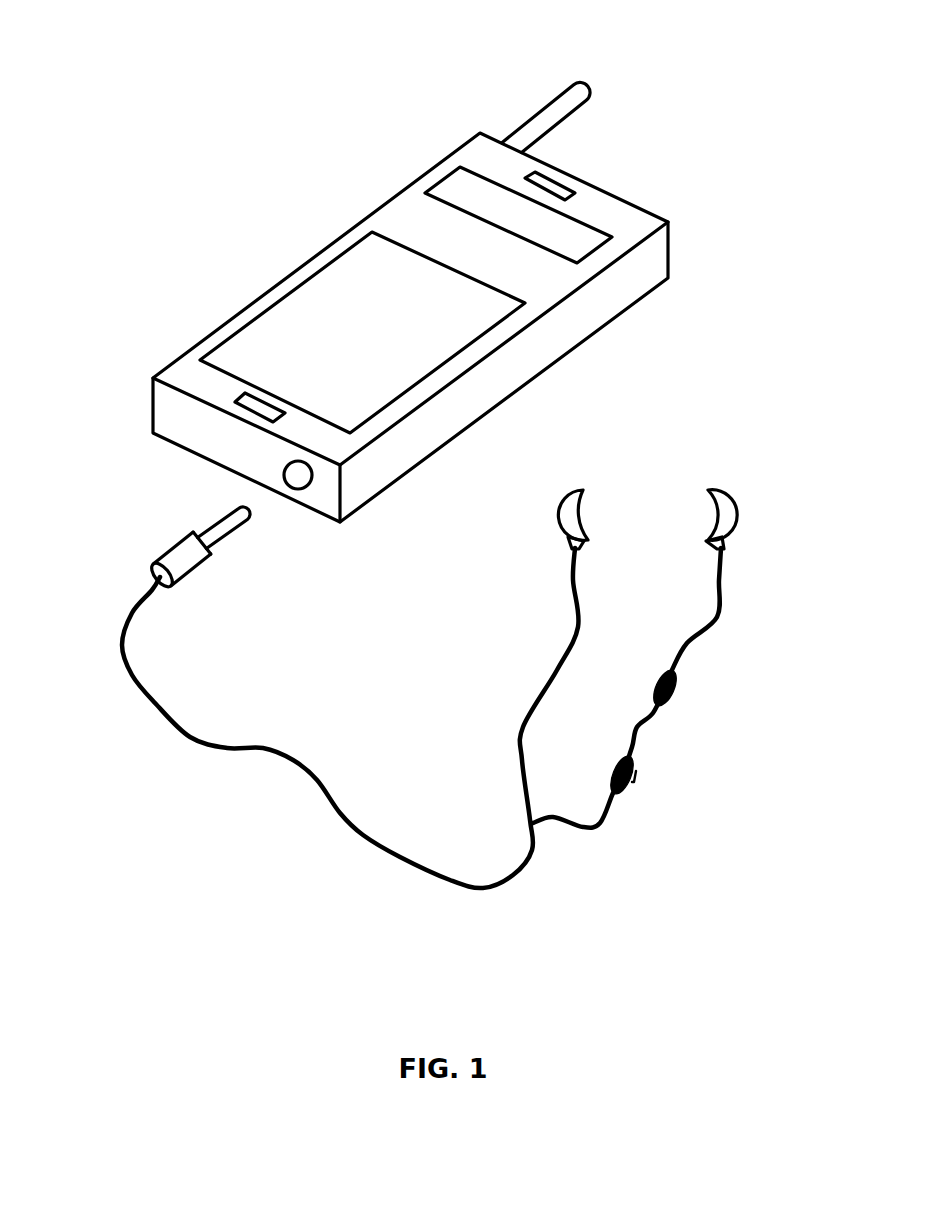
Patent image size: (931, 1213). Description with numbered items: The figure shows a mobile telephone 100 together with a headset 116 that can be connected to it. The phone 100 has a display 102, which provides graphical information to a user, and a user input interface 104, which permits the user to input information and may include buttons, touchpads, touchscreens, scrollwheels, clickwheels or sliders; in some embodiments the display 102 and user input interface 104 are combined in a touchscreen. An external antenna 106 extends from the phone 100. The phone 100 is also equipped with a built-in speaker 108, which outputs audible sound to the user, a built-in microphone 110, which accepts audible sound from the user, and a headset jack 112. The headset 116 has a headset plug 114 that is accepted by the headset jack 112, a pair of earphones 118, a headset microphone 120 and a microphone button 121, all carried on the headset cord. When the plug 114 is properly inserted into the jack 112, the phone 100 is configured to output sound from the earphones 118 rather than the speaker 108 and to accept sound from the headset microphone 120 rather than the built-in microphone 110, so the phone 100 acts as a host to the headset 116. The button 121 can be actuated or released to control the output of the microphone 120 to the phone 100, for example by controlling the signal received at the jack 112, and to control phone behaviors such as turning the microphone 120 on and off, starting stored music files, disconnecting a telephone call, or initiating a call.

The mobile telephone 100 is at (378, 208).
The display 102 is at (502, 233).
The user input interface 104 is at (337, 338).
The external antenna 106 is at (540, 105).
The built-in speaker 108 is at (553, 180).
The built-in microphone 110 is at (227, 413).
The headset jack 112 is at (300, 488).
The headset plug 114 is at (177, 542).
The headset 116 is at (553, 912).
The earphones 118 is at (588, 510).
The headset microphone 120 is at (673, 697).
The microphone button 121 is at (622, 790).